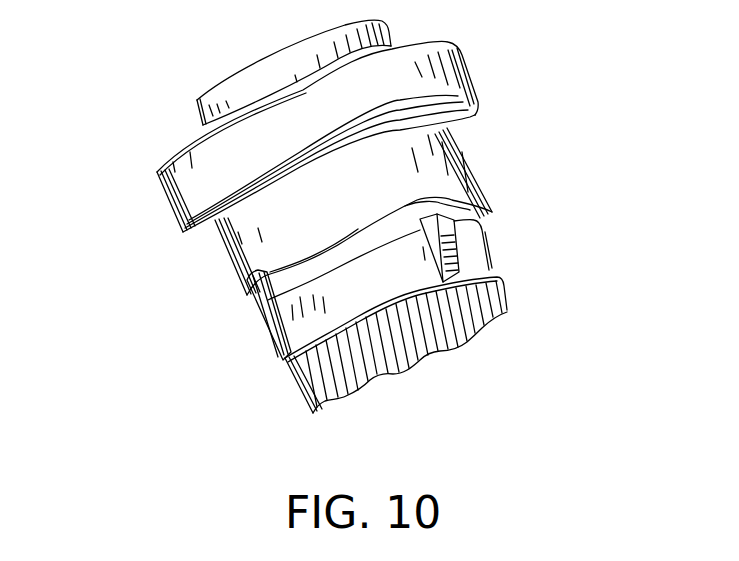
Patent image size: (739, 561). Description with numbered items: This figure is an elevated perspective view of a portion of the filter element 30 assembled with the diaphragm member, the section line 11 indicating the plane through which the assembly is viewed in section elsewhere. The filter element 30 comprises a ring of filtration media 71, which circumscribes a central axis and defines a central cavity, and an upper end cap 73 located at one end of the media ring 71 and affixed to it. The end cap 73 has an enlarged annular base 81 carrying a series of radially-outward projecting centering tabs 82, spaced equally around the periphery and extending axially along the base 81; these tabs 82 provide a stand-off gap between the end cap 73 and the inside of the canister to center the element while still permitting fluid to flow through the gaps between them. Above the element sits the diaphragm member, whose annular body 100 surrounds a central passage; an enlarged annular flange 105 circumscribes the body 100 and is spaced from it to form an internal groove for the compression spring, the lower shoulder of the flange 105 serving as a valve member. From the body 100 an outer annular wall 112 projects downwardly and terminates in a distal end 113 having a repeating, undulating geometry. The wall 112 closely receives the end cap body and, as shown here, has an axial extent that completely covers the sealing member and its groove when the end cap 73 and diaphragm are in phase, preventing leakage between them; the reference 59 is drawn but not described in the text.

The section line 11- 11 is at (160, 197).
The filter element 30 is at (424, 324).
The cap assembly 59 is at (338, 190).
The ring of filtration media 71 is at (419, 357).
The upper end cap 73 is at (310, 370).
The annular base 81 is at (400, 317).
The centering tabs 82 is at (263, 332).
The annular body 100 is at (384, 244).
The annular flange 105 is at (157, 177).
The outer annular wall 112 is at (243, 283).
The distal end 113 is at (490, 215).